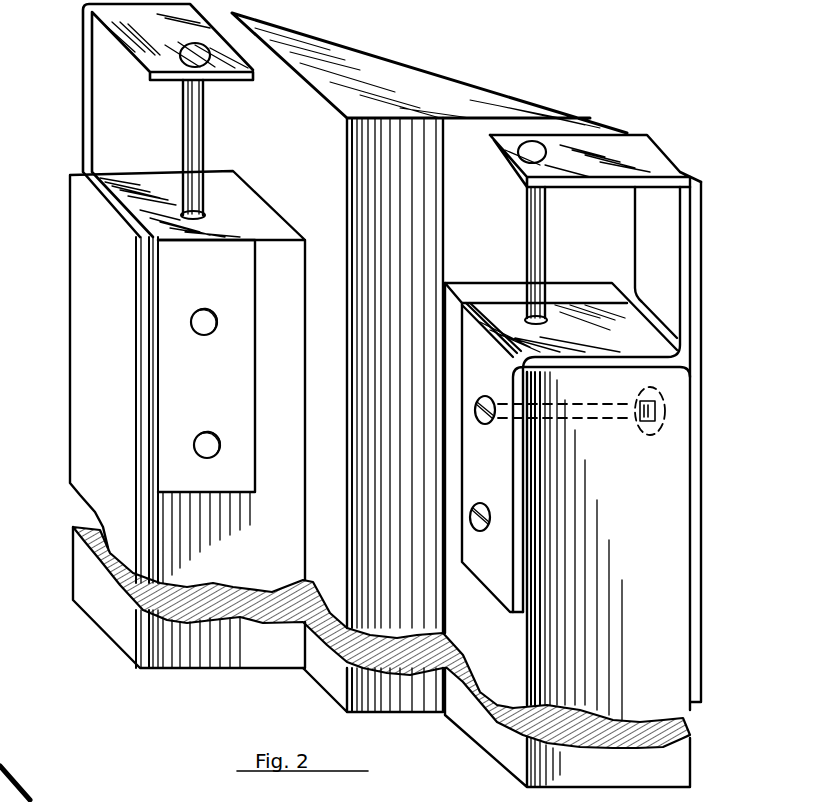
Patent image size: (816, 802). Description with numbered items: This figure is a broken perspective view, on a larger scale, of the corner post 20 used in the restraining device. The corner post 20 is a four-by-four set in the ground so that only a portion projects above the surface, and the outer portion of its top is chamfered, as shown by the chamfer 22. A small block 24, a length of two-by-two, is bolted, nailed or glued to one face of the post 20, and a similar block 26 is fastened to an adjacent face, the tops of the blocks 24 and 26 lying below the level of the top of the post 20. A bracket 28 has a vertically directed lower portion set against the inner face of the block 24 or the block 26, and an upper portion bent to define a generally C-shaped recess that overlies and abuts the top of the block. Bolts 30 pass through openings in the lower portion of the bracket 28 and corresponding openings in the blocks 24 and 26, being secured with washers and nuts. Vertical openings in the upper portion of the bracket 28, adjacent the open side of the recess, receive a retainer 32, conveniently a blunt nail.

The corner post 20 is at (397, 610).
The chamfer 22 is at (613, 130).
The small block 24 is at (87, 471).
The block 26 is at (667, 707).
The bracket 28 is at (165, 293).
The bolts 30 is at (198, 432).
The retainer 32 is at (195, 147).